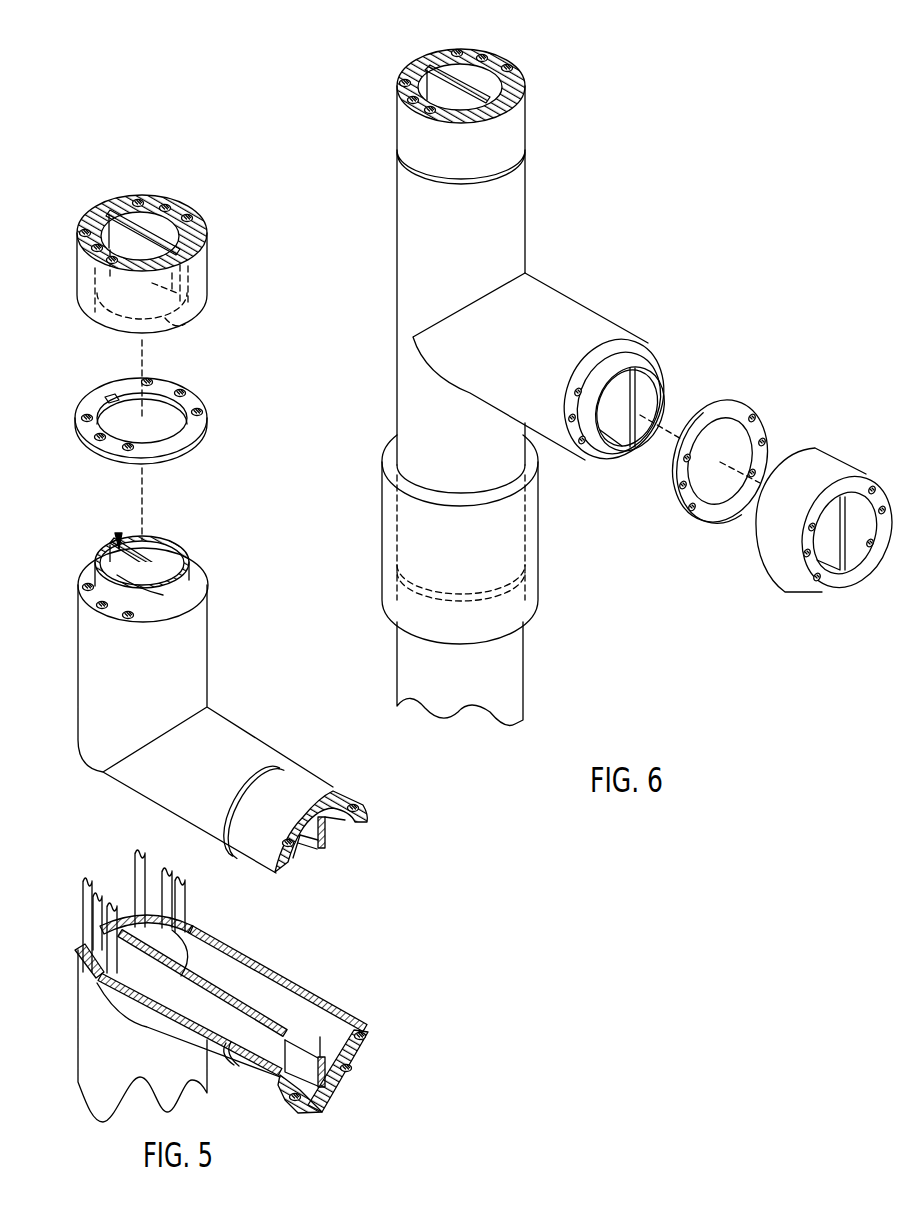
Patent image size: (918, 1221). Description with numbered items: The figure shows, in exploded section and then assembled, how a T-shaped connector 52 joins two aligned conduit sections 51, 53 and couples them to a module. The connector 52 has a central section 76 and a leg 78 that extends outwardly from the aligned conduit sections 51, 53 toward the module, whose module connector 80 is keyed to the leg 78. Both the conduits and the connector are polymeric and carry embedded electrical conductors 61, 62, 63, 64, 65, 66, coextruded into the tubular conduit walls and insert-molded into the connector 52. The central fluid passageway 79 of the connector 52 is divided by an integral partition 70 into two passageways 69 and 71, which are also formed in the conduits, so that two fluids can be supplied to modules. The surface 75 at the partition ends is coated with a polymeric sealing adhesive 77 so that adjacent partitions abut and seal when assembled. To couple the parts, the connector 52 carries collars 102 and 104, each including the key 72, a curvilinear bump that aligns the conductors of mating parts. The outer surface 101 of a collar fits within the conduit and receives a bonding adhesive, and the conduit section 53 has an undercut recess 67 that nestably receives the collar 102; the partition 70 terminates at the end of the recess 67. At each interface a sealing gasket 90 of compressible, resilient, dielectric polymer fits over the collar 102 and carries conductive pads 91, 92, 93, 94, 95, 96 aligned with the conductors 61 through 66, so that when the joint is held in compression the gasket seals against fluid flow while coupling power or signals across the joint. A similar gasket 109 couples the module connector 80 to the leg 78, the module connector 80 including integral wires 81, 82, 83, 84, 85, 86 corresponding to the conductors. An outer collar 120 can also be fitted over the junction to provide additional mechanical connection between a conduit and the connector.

In FIG. 6, the conduit section 51 is at (515, 688).
In FIG. 5, the T-shaped connector 52 is at (207, 695).
In FIG. 6, the T-shaped connector 52 is at (526, 240).
In FIG. 5, the conduit section 53 is at (200, 267).
In FIG. 6, the conduit section 53 is at (515, 118).
In FIG. 5, the electrical conductor 61 is at (140, 200).
In FIG. 6, the electrical conductor 61 is at (458, 50).
In FIG. 5, the electrical conductor 62 is at (167, 203).
In FIG. 6, the electrical conductor 62 is at (488, 57).
In FIG. 5, the electrical conductor 63 is at (200, 218).
In FIG. 6, the electrical conductor 63 is at (512, 68).
In FIG. 5, the electrical conductor 64 is at (105, 262).
In FIG. 6, the electrical conductor 64 is at (418, 108).
In FIG. 5, the electrical conductor 65 is at (93, 248).
In FIG. 6, the electrical conductor 65 is at (408, 96).
In FIG. 5, the electrical conductor 66 is at (80, 230).
In FIG. 6, the electrical conductor 66 is at (402, 78).
In FIG. 5, the undercut recess 67 is at (185, 324).
In FIG. 5, the passageway 69 is at (118, 568).
In FIG. 5, the partition 70 is at (120, 200).
In FIG. 6, the partition 70 is at (632, 410).
In FIG. 5, the passageway 71 is at (170, 553).
In FIG. 5, the keyway 72 is at (104, 546).
In FIG. 6, the keyway 72 is at (632, 448).
In FIG. 5, the partition end surface 75 is at (178, 560).
In FIG. 5, the central section 76 is at (78, 722).
In FIG. 6, the central section 76 is at (395, 290).
In FIG. 5, the polymeric sealing adhesive 77 is at (150, 548).
In FIG. 5, the leg 78 is at (248, 742).
In FIG. 6, the leg 78 is at (580, 318).
In FIG. 5, the central fluid passageway 79 is at (117, 538).
In FIG. 5, the module connector 80 is at (322, 782).
In FIG. 6, the module connector 80 is at (782, 550).
In FIG. 5, the integral wire 81 is at (367, 808).
In FIG. 5, the integral wire 82 is at (368, 1035).
In FIG. 5, the integral wire 83 is at (350, 1070).
In FIG. 5, the integral wire 84 is at (292, 1108).
In FIG. 5, the integral wire 85 is at (305, 1105).
In FIG. 5, the integral wire 86 is at (298, 850).
In FIG. 5, the sealing gasket 90 is at (95, 398).
In FIG. 6, the sealing gasket 90 is at (506, 588).
In FIG. 5, the conductive pad 91 is at (150, 380).
In FIG. 5, the conductive pad 92 is at (185, 392).
In FIG. 5, the conductive pad 93 is at (200, 410).
In FIG. 5, the conductive pad 94 is at (125, 447).
In FIG. 5, the conductive pad 95 is at (97, 437).
In FIG. 5, the conductive pad 96 is at (80, 415).
In FIG. 5, the collar outer surface 101 is at (162, 595).
In FIG. 5, the collar 102 is at (190, 578).
In FIG. 5, the collar 104 is at (317, 1003).
In FIG. 6, the collar 104 is at (663, 382).
In FIG. 5, the gasket 109 is at (282, 765).
In FIG. 6, the gasket 109 is at (735, 408).
In FIG. 6, the outer collar 120 is at (385, 517).